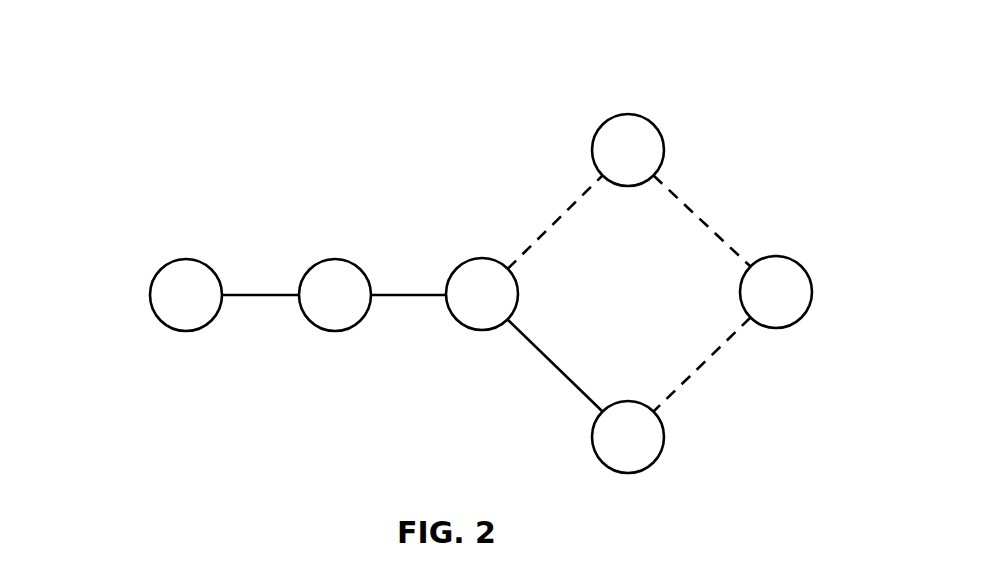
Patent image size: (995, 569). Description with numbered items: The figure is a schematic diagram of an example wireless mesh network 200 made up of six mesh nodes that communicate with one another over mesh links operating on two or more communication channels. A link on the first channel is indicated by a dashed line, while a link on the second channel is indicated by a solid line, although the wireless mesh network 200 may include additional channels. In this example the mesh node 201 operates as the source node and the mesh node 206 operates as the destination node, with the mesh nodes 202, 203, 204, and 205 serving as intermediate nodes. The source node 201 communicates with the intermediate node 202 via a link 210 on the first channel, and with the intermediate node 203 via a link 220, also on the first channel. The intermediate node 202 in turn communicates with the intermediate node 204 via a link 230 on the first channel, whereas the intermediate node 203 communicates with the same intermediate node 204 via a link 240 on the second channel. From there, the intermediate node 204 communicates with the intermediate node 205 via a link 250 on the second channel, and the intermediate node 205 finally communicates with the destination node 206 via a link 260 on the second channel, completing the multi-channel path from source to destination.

The wireless mesh network 200 is at (113, 79).
The source node 201 is at (812, 292).
The intermediate node 202 is at (594, 146).
The intermediate node 203 is at (663, 437).
The intermediate node 204 is at (482, 256).
The intermediate node 205 is at (335, 257).
The destination node 206 is at (186, 257).
The link 210 is at (703, 222).
The link 220 is at (707, 360).
The link 230 is at (557, 219).
The link 240 is at (555, 367).
The link 250 is at (408, 295).
The link 260 is at (260, 295).